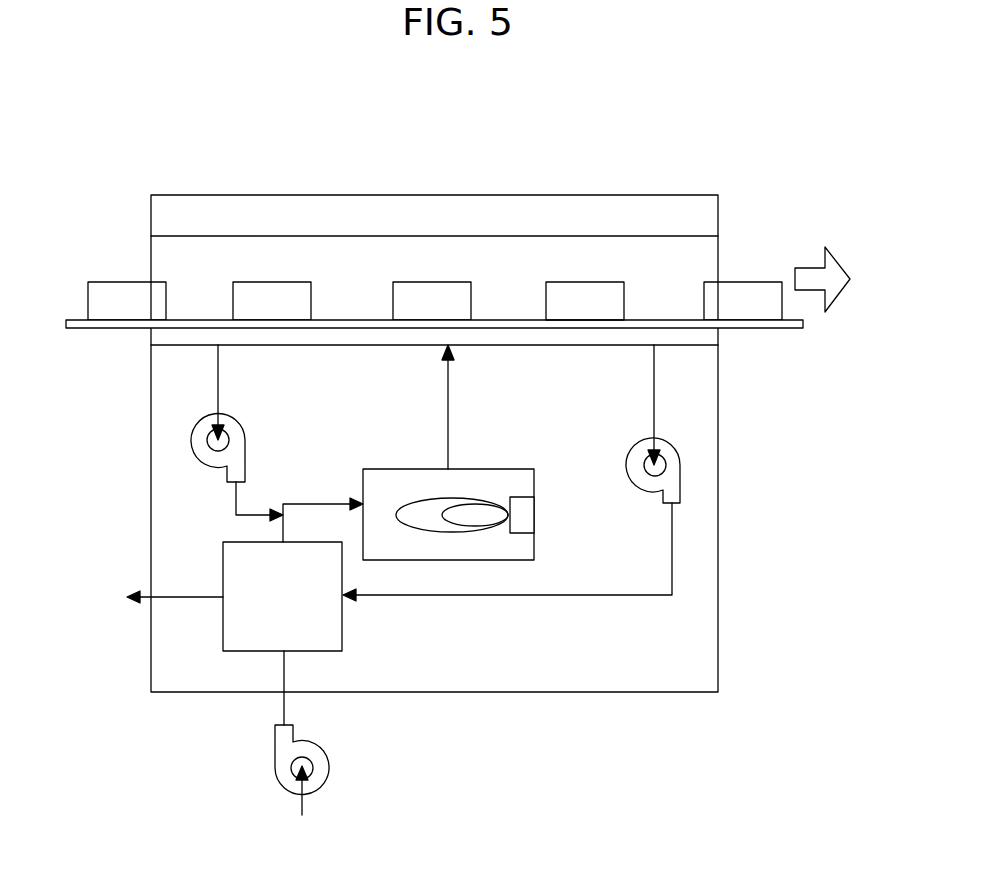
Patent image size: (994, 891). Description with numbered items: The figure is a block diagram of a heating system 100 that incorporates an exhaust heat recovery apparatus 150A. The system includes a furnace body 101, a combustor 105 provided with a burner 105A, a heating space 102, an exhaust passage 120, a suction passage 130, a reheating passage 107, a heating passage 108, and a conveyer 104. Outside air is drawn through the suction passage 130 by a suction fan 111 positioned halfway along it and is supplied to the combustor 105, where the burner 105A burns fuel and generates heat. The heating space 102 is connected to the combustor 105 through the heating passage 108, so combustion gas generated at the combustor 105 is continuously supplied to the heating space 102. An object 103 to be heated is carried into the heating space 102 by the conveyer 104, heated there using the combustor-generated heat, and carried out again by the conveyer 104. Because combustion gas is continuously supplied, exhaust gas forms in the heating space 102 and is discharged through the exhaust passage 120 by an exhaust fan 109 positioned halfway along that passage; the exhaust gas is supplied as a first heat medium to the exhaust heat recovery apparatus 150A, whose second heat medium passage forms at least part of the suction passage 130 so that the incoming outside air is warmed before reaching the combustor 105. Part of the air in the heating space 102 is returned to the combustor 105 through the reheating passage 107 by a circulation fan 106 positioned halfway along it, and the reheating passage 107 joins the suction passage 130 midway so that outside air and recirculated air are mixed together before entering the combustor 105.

The heating system 100 is at (643, 172).
The furnace body 101 is at (719, 430).
The heating space 102 is at (445, 255).
The object to be heated 103 is at (585, 300).
The conveyer 104 is at (78, 320).
The combustor 105 is at (489, 562).
The burner 105A is at (526, 520).
The circulation fan 106 is at (191, 442).
The reheating passage 107 is at (234, 500).
The heating passage 108 is at (449, 404).
The exhaust fan 109 is at (681, 480).
The suction fan 111 is at (329, 764).
The exhaust passage 120 is at (443, 598).
The suction passage 130 is at (283, 668).
The exhaust heat recovery apparatus 150A is at (250, 631).